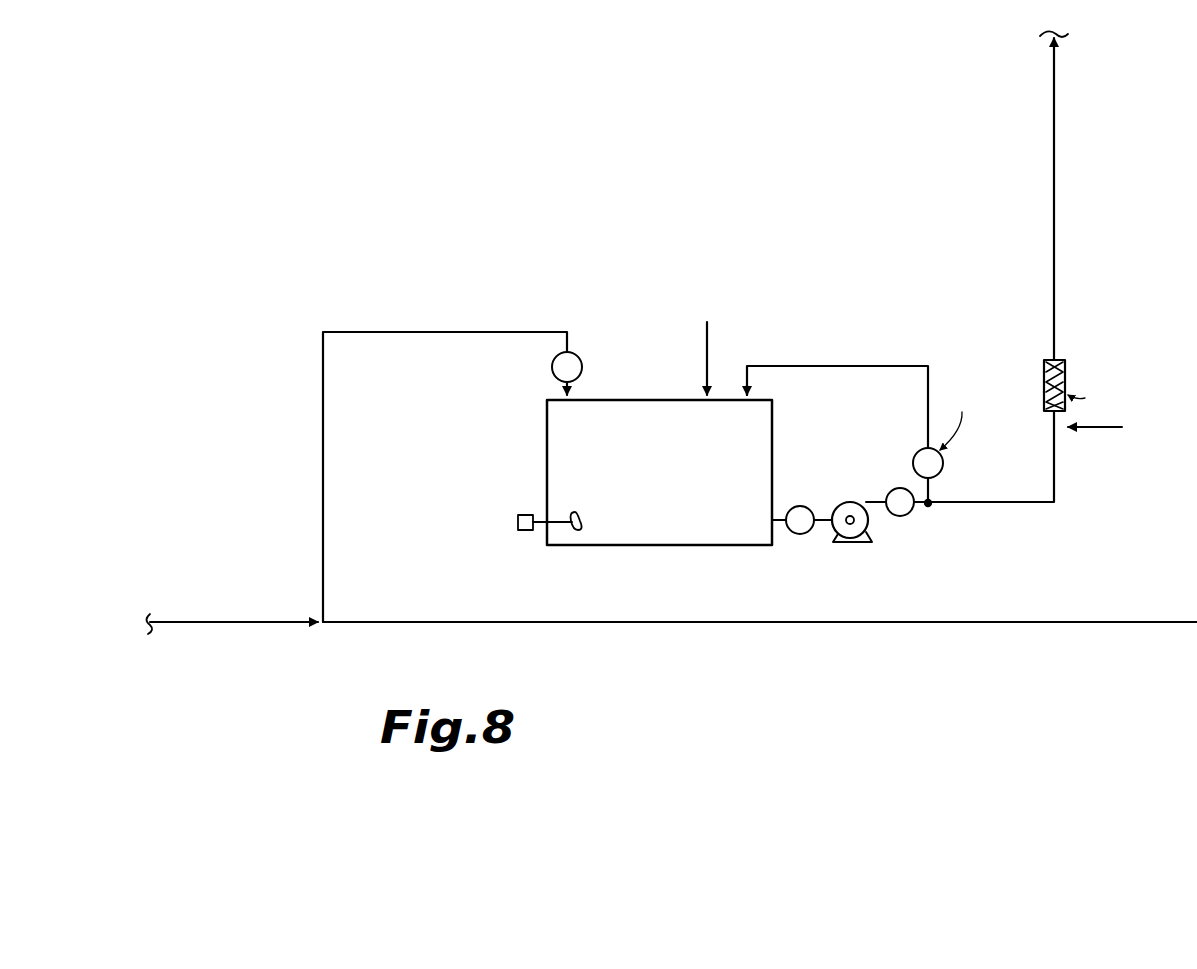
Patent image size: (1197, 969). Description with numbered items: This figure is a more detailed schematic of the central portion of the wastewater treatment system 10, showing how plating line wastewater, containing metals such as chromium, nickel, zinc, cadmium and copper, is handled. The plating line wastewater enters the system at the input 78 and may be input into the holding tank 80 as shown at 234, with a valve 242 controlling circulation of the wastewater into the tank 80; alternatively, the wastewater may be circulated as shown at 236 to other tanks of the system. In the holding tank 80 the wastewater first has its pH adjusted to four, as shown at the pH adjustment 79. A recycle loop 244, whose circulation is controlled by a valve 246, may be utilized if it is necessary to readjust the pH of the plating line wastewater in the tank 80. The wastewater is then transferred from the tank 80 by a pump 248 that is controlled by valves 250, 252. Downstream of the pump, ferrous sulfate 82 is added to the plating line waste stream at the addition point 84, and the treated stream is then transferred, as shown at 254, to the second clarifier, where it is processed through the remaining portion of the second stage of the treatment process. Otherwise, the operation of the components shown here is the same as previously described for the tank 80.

The system 10 is at (692, 260).
The plating line wastewater input 78 is at (215, 622).
The pH adjustment 79 is at (707, 345).
The holding tank 80 is at (628, 400).
The ferrous sulfate 82 is at (1090, 430).
The ferrous sulfate addition point 84 is at (1063, 358).
The tank input 234 is at (453, 317).
The circulation path 236 is at (713, 622).
The valve 242 is at (552, 365).
The recycle loop 244 is at (838, 366).
The valve 246 is at (943, 468).
The pump 248 is at (855, 502).
The valve 250 is at (805, 505).
The valve 252 is at (908, 514).
The wastewater transfer path 254 is at (1054, 152).